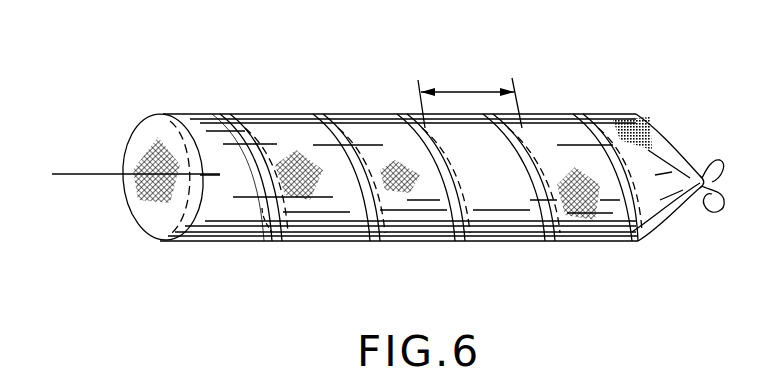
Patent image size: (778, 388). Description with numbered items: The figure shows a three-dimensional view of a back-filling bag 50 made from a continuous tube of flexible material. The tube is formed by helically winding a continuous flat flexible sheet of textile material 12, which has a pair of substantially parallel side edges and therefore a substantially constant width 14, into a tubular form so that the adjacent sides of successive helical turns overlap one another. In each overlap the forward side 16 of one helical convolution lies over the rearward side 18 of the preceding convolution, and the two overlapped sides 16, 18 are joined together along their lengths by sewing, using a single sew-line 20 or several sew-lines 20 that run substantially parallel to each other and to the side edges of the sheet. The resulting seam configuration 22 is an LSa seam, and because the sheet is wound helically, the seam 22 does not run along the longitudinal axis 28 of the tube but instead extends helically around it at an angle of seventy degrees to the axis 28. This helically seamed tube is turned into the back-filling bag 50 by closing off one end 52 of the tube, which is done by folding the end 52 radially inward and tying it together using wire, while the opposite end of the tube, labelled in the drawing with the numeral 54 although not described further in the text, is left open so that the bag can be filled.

The textile material 12 is at (555, 112).
The width 14 is at (465, 92).
The forward side 16 is at (265, 212).
The rearward side 18 is at (307, 246).
The sew-line 20 is at (347, 110).
The seam configuration 22 is at (230, 98).
The longitudinal axis 28 is at (96, 172).
The back-filling bag 50 is at (216, 98).
The end 52 is at (707, 145).
The open end rim 54 is at (126, 232).